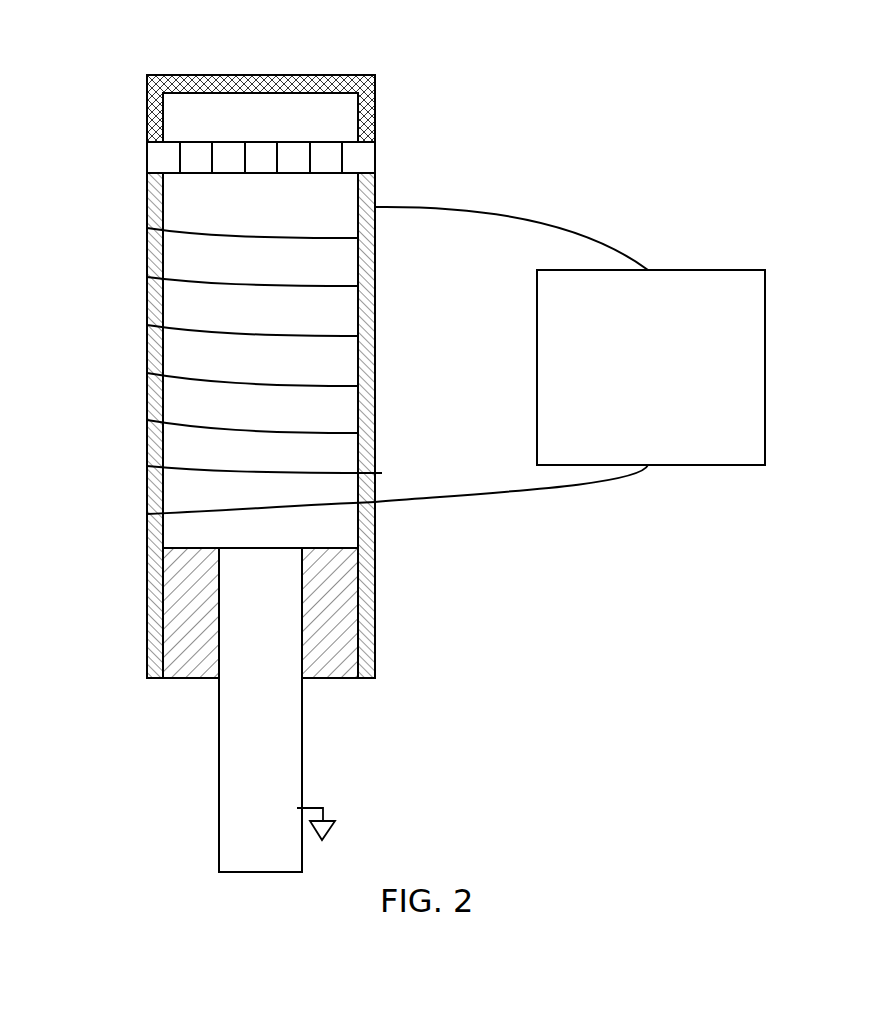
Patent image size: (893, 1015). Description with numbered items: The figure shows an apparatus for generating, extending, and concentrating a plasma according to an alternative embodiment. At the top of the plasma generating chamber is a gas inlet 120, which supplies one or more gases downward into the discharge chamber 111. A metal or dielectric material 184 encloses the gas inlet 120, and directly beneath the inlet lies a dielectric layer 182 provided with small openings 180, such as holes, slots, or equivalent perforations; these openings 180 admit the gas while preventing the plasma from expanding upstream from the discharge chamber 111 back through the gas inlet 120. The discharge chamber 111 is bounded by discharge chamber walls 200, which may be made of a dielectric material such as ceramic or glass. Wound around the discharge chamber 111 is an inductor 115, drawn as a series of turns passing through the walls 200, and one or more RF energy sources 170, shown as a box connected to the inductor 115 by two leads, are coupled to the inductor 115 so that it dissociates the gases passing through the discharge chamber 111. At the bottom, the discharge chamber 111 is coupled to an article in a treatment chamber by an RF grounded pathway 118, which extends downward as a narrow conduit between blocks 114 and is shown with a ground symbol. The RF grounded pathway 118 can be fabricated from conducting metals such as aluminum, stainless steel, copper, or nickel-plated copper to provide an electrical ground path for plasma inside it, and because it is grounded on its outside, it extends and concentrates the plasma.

The metal or dielectric material 184 is at (147, 87).
The gas inlet 120 is at (212, 110).
The dielectric layer 182 is at (165, 158).
The small openings 180 is at (303, 158).
The inductor 115 is at (323, 286).
The discharge chamber 111 is at (239, 371).
The discharge chamber walls 200 is at (147, 448).
The RF grounded pathway 118 is at (258, 610).
The bottom insulating blocks 114 is at (323, 595).
The one or more RF energy sources 170 is at (570, 354).